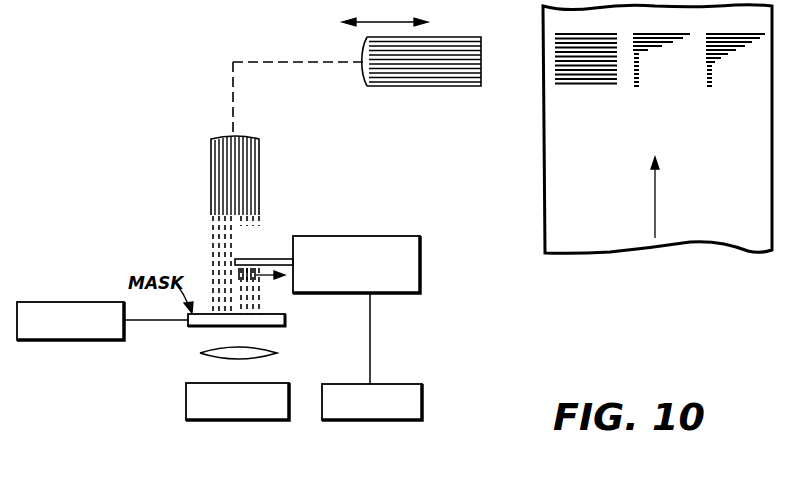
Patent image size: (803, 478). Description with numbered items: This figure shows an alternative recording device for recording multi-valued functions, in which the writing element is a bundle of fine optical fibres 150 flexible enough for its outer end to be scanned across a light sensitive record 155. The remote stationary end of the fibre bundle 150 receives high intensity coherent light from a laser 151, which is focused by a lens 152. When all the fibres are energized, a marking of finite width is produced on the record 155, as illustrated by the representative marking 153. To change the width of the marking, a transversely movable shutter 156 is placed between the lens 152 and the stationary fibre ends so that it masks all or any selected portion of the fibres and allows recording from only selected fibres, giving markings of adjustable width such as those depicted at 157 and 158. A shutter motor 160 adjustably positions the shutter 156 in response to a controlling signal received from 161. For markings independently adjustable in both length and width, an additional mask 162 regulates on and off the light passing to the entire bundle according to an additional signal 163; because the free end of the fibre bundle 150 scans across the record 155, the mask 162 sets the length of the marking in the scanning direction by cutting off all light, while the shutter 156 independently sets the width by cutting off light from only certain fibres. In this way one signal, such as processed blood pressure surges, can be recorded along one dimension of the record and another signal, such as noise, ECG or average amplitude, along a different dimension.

The bundle of fine optical fibres 150 is at (448, 48).
The laser 151 is at (186, 400).
The lens 152 is at (206, 352).
The representative marking 153 is at (584, 68).
The light sensitive record 155 is at (562, 145).
The transversely movable shutter 156 is at (265, 258).
The marking of adjustable width 157 is at (650, 70).
The tapered exposure pattern 158 is at (728, 68).
The shutter motor 160 is at (396, 236).
The controlling signal 161 is at (422, 402).
The mask 162 is at (285, 320).
The additional signal 163 is at (56, 280).